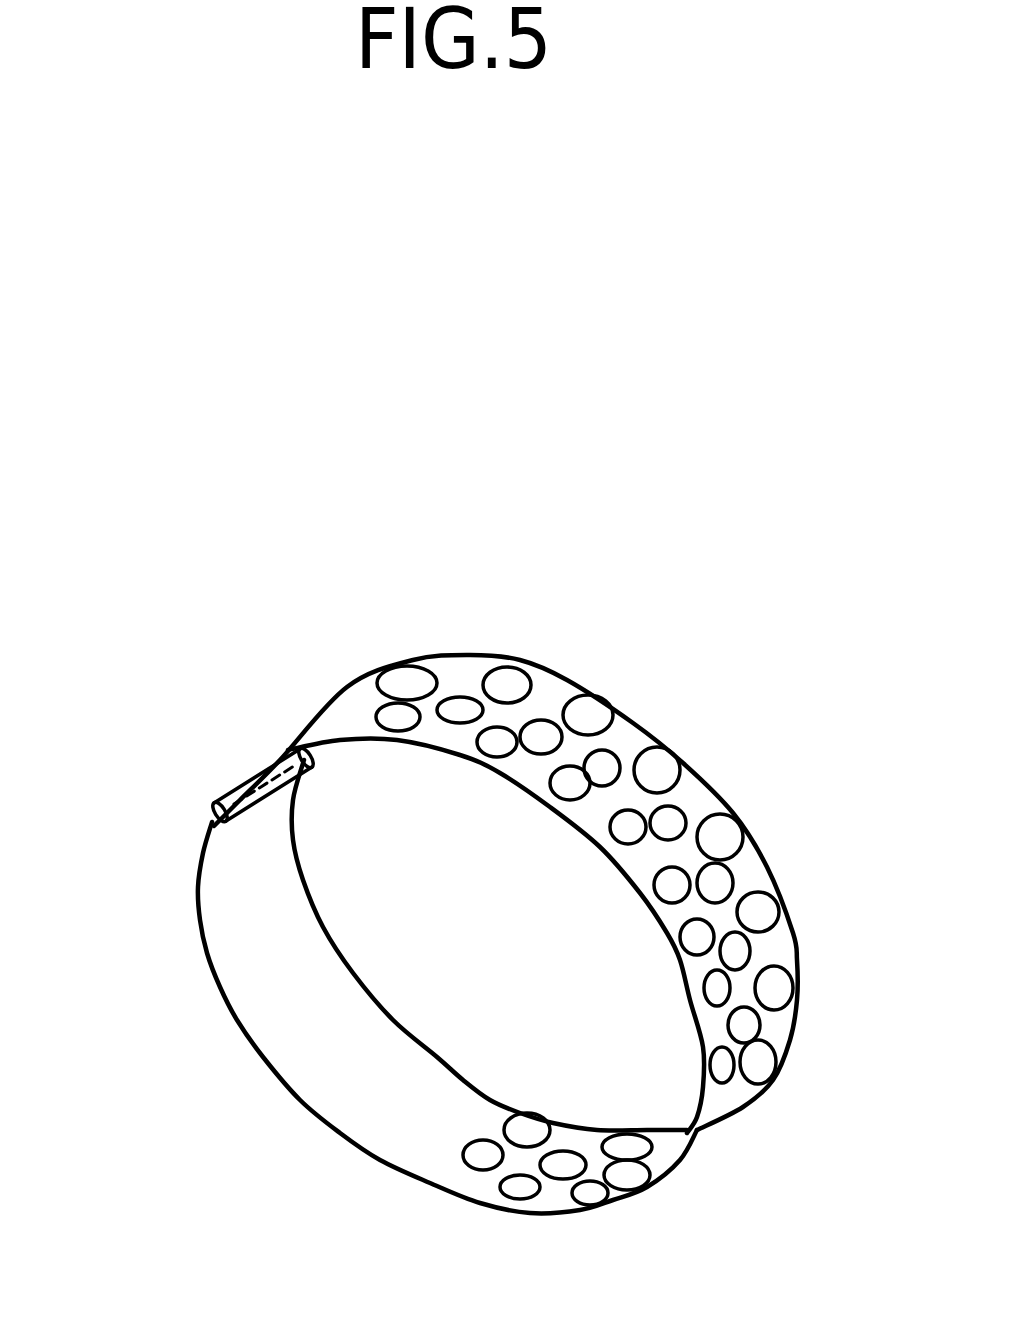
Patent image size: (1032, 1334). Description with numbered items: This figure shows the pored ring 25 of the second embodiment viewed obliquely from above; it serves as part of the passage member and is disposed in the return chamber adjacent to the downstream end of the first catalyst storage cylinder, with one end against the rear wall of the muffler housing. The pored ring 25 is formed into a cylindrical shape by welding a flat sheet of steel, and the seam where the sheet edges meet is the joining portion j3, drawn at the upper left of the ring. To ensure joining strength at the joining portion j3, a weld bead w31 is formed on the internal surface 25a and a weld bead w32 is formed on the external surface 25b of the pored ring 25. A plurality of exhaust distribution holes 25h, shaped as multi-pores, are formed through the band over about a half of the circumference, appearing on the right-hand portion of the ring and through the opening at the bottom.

The pored ring 25 is at (237, 1020).
The internal surface 25a is at (263, 895).
The external surface 25b is at (347, 712).
The exhaust distribution holes 25h is at (720, 883).
The joining portion j3 is at (266, 751).
The weld bead w31 is at (312, 765).
The weld bead w32 is at (207, 808).